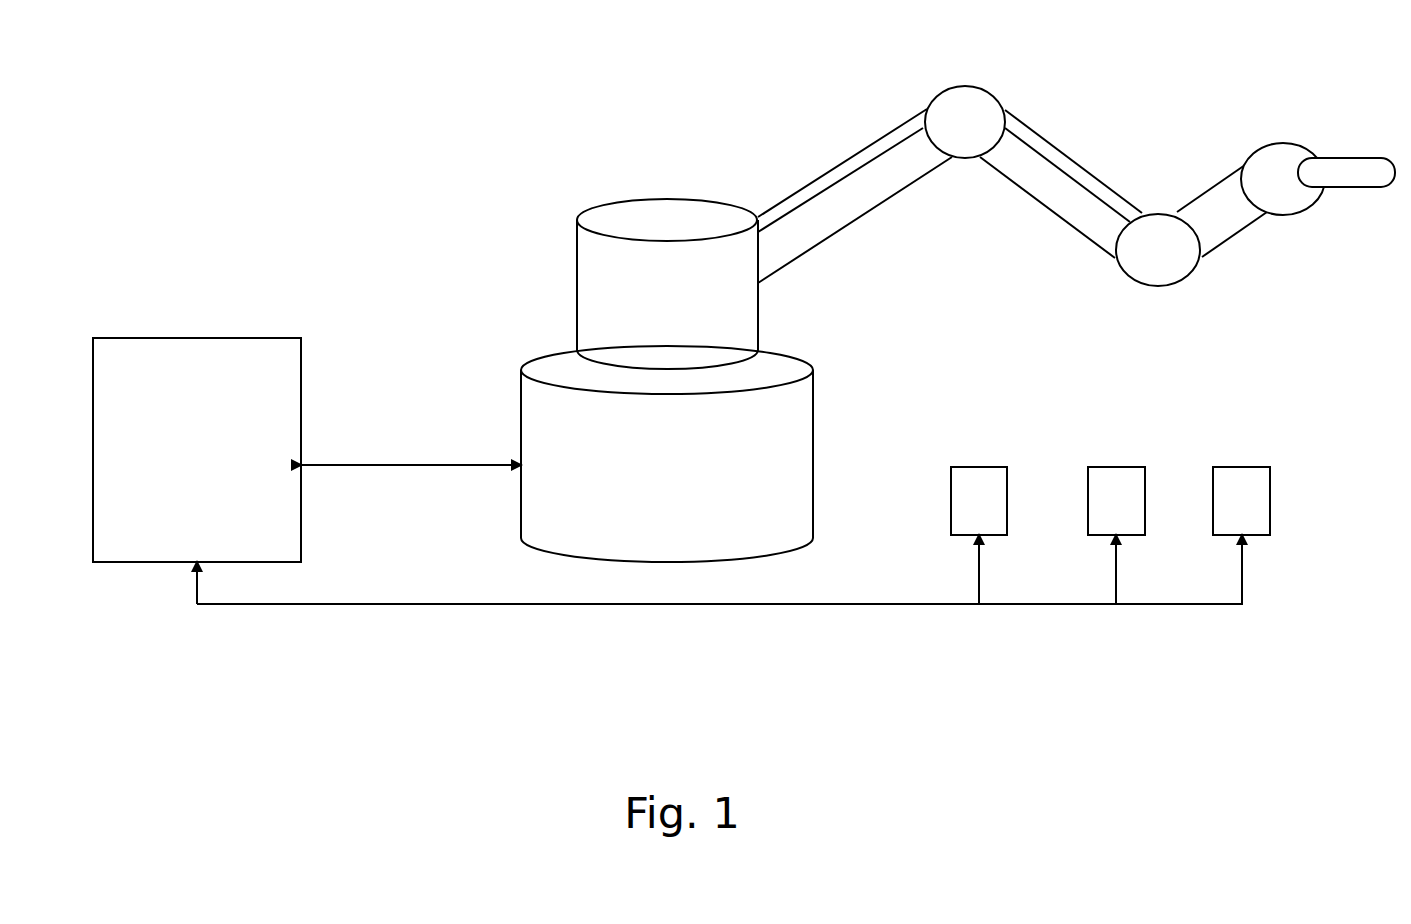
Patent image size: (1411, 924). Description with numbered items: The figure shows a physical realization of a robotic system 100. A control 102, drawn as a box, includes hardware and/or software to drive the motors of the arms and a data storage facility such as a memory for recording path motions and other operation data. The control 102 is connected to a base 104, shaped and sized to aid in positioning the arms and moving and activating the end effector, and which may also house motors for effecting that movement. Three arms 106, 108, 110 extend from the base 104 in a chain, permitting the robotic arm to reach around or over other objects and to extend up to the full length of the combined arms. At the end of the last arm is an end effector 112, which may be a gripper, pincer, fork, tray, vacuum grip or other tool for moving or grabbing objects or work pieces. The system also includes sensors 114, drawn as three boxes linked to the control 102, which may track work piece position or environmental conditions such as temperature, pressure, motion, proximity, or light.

The robotic system 100 is at (327, 143).
The control system 102 is at (188, 338).
The base 104 is at (577, 297).
The arm 106 is at (883, 140).
The arm 108 is at (1035, 200).
The arm 110 is at (1213, 186).
The end effector 112 is at (1337, 158).
The sensors 114 is at (962, 466).